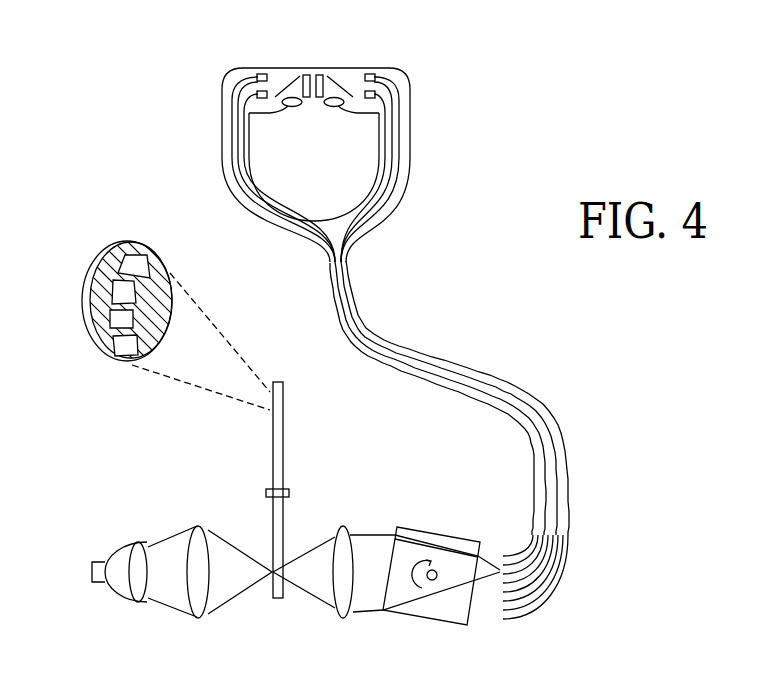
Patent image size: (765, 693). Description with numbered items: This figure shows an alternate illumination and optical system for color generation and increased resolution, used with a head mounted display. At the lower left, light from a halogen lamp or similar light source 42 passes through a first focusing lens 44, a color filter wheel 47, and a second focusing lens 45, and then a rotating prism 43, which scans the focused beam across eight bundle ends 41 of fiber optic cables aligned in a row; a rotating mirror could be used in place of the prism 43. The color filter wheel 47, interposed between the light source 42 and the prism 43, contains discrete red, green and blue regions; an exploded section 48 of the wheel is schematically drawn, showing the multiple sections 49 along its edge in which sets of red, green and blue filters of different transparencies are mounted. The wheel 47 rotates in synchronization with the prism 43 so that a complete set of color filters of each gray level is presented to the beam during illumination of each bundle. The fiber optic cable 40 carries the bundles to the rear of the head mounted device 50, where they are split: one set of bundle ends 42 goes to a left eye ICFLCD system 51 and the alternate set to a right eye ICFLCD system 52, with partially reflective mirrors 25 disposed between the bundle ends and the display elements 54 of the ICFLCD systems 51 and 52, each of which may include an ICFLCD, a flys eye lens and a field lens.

The partially reflective mirrors 25 is at (337, 68).
The fiber optic cable 40 is at (485, 392).
The bundle ends 41 is at (506, 555).
The light source 42 is at (262, 74).
The rotating prism 43 is at (433, 610).
The focusing lens 44 is at (197, 590).
The focusing lens 45 is at (340, 590).
The color filter wheel 47 is at (272, 460).
The exploded section of color filter wheel 48 is at (100, 278).
The sections 49 is at (112, 316).
The head mounted device 50 is at (222, 136).
The left eye ICFLCD system 51 is at (309, 107).
The right eye ICFLCD system 52 is at (314, 106).
The display element 54 is at (287, 118).